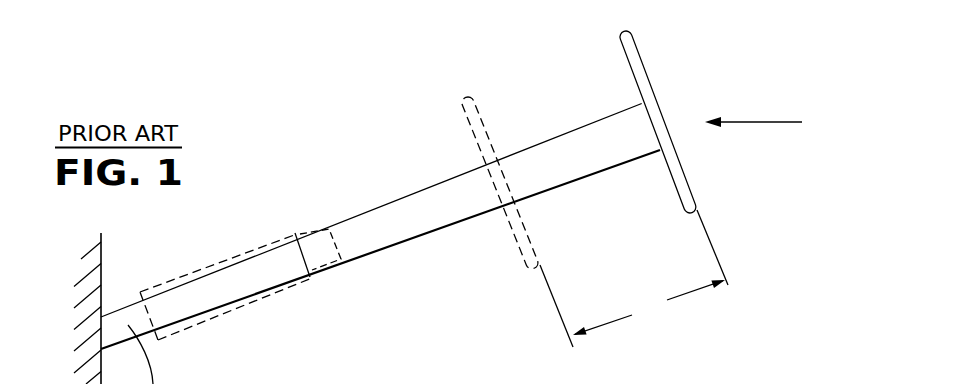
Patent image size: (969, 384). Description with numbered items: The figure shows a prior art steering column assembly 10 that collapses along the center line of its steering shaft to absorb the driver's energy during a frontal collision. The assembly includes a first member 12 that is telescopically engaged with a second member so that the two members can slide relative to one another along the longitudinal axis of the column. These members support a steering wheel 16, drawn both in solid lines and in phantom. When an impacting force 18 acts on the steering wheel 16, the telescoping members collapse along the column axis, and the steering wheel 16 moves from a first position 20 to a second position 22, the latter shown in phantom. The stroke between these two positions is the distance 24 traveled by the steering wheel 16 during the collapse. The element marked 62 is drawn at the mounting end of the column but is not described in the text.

The steering column assembly 10 is at (283, 170).
The first member 12 is at (419, 229).
The steering wheel 16 is at (693, 180).
The impacting force 18 is at (761, 122).
The first position 20 is at (657, 107).
The second position 22 is at (487, 122).
The distance 24 is at (634, 278).
The wall / mounting surface 62 is at (308, 308).